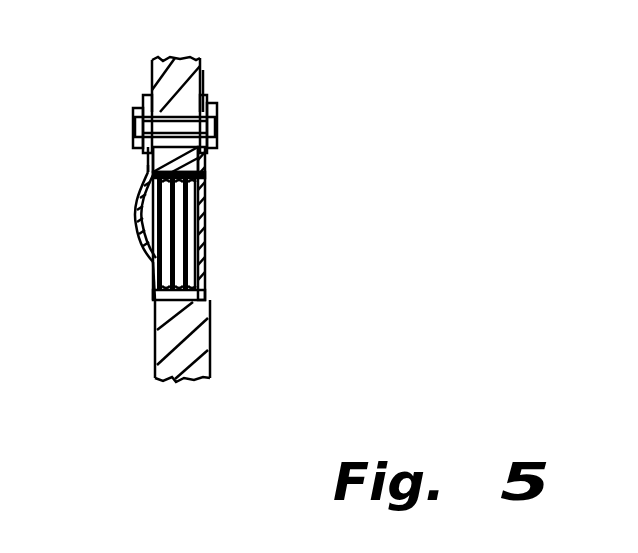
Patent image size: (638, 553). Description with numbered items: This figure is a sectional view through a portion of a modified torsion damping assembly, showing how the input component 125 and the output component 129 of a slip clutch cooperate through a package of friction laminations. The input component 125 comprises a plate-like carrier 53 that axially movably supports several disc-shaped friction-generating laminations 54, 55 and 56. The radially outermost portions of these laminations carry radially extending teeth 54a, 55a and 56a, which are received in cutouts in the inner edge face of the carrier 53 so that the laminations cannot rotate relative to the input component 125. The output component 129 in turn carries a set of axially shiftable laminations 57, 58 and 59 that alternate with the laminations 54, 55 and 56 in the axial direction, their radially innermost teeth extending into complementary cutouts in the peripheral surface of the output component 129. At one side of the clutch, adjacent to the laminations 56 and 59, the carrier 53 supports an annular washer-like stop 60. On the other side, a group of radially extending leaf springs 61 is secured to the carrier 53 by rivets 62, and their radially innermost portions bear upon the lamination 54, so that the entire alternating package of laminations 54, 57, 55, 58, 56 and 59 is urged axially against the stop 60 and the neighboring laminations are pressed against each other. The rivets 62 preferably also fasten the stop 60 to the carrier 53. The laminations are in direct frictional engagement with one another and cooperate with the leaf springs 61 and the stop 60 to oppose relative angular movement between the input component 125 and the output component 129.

The plate-like carrier 53 is at (172, 86).
The input component 125 is at (203, 72).
The annular washer-like stop 60 is at (208, 98).
The rivets 62 is at (133, 121).
The lamination 56 is at (207, 222).
The teeth 56a is at (207, 190).
The teeth 55a is at (210, 180).
The lamination 55 is at (152, 253).
The lamination 57 is at (157, 287).
The lamination 58 is at (207, 255).
The lamination 59 is at (207, 280).
The lamination 54 is at (142, 229).
The teeth 54a is at (140, 195).
The leaf springs 61 is at (140, 188).
The output component 129 is at (175, 373).